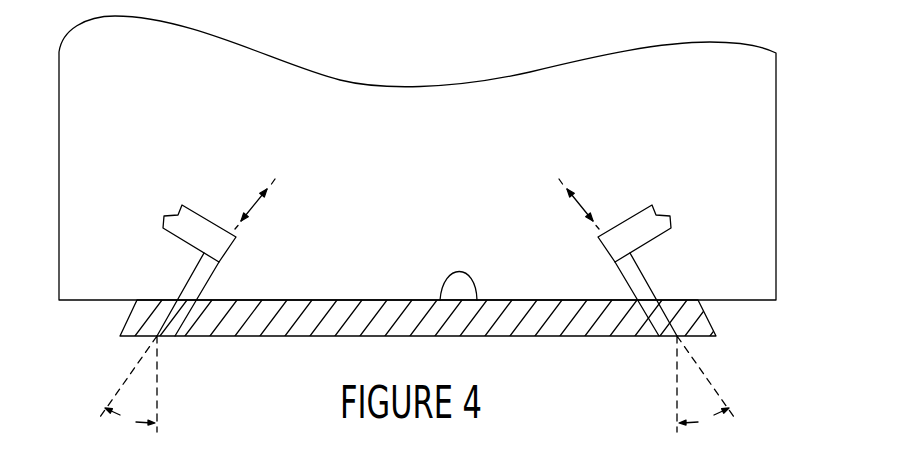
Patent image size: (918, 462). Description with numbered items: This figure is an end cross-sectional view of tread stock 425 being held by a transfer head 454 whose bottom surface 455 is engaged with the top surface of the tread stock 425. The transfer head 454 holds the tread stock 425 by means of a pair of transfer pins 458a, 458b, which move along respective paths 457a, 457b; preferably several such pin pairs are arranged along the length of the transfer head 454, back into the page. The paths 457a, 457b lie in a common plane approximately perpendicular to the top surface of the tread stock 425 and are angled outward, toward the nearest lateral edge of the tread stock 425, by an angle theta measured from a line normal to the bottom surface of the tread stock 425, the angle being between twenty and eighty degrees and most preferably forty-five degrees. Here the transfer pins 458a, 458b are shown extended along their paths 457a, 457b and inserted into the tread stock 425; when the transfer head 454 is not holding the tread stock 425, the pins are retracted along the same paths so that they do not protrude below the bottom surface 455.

The transfer head 454 is at (343, 257).
The tread stock 425 is at (534, 337).
The bottom surface 455 is at (440, 300).
The transfer pin 458a is at (197, 303).
The transfer pin 458b is at (635, 303).
The path 457a is at (127, 382).
The path 457b is at (705, 377).